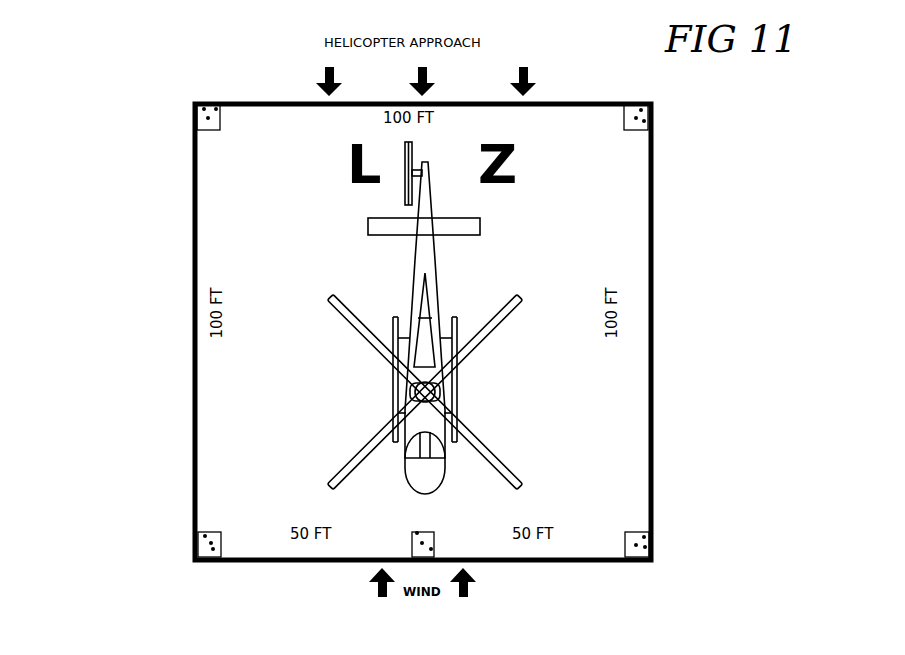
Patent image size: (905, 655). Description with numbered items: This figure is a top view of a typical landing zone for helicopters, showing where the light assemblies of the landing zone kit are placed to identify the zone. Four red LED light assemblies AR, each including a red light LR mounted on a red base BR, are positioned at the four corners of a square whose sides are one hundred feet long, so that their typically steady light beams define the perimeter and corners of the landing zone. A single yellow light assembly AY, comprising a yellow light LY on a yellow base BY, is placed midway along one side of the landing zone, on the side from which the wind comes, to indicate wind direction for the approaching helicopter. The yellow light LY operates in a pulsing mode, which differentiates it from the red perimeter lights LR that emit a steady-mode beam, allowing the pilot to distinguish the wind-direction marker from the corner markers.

The red LED light assembly AR is at (216, 108).
The red base BR is at (204, 108).
The red light LR is at (208, 119).
The yellow light assembly AY is at (417, 533).
The yellow base BY is at (422, 543).
The yellow light LY is at (431, 549).